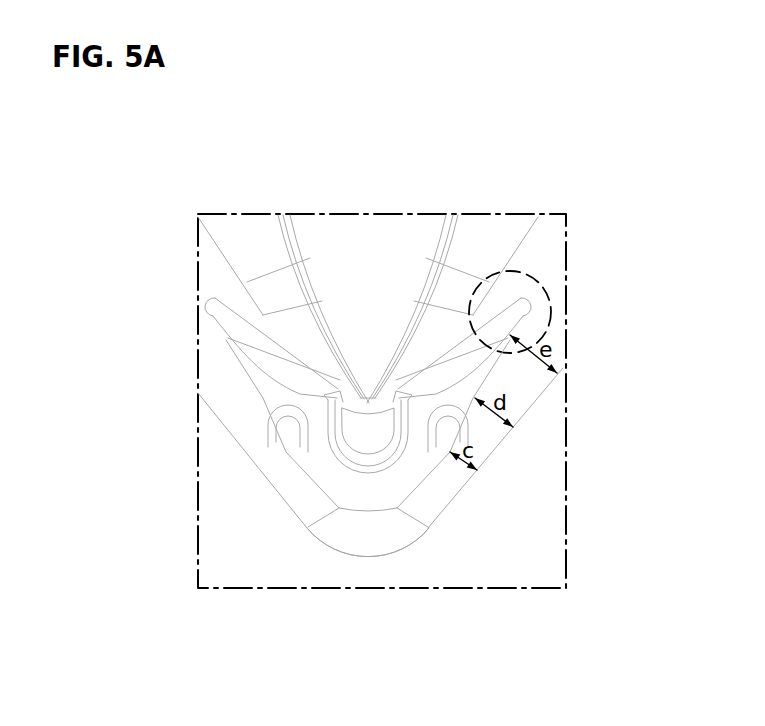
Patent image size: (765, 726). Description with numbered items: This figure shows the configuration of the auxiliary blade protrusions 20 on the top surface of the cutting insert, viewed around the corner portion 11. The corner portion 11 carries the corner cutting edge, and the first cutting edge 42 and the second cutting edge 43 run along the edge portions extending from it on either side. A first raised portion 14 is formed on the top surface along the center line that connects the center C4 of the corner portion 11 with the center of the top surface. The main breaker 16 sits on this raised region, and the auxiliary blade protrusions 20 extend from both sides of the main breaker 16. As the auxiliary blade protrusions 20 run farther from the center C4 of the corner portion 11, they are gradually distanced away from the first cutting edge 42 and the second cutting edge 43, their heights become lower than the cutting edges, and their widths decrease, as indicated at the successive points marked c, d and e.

The corner portion 11 is at (395, 553).
The first raised portion 14 is at (336, 240).
The main breaker 16 is at (362, 432).
The auxiliary blade protrusions 20 is at (257, 372).
The first cutting edge 42 is at (495, 448).
The second cutting edge 43 is at (220, 422).
The center of the corner portion C4 is at (330, 555).